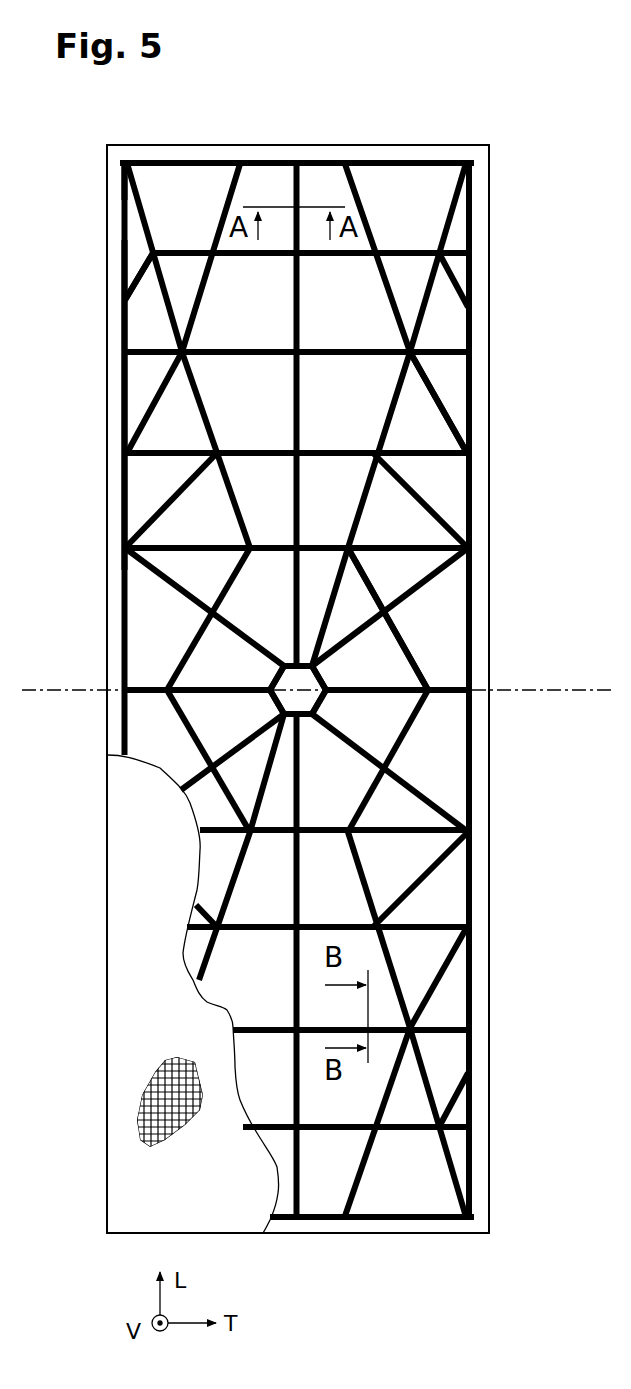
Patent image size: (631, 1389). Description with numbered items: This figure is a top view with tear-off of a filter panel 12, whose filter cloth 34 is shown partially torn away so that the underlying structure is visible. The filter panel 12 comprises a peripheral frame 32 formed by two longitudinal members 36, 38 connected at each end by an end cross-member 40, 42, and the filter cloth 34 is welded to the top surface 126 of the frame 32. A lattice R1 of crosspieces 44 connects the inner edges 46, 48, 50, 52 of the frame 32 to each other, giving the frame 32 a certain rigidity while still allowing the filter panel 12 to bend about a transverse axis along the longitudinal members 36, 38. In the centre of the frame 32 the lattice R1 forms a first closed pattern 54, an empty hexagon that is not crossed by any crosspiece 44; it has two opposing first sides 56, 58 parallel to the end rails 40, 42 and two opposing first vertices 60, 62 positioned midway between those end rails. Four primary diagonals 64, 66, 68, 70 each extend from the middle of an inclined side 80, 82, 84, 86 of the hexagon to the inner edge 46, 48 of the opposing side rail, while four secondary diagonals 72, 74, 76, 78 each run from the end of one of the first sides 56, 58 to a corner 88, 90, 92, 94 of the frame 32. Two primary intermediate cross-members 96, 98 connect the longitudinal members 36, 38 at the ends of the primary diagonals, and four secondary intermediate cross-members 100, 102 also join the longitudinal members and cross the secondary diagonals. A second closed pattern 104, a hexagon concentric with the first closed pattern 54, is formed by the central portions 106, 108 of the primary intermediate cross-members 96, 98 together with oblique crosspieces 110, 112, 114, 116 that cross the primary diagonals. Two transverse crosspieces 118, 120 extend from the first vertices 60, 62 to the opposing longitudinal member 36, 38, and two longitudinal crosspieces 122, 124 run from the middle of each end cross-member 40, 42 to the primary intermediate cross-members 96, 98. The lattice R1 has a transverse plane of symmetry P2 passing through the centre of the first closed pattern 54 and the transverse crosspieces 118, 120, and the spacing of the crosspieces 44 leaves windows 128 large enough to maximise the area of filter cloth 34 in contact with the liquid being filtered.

The filter panel 12 is at (541, 746).
The peripheral frame 32 is at (101, 447).
The filter cloth 34 is at (164, 1172).
The longitudinal member 36 is at (101, 642).
The longitudinal member 38 is at (490, 510).
The end cross-member 40 is at (286, 143).
The end cross-member 42 is at (286, 1236).
The crosspieces 44 is at (417, 245).
The inner edge 46 is at (142, 322).
The inner edge 48 is at (455, 325).
The inner edge 50 is at (177, 172).
The inner edge 52 is at (440, 1175).
The first closed pattern 54 is at (351, 680).
The first side 56 is at (395, 590).
The first side 58 is at (461, 797).
The first vertex 60 is at (258, 700).
The first vertex 62 is at (345, 700).
The primary diagonal 64 is at (141, 588).
The primary diagonal 66 is at (416, 621).
The primary diagonal 68 is at (187, 792).
The primary diagonal 70 is at (386, 813).
The secondary diagonal 72 is at (213, 493).
The secondary diagonal 74 is at (407, 412).
The secondary diagonal 76 is at (216, 863).
The secondary diagonal 78 is at (440, 905).
The inclined side of the hexagon 80 is at (252, 680).
The inclined side of the hexagon 82 is at (370, 600).
The inclined side of the hexagon 84 is at (252, 712).
The inclined side of the hexagon 86 is at (400, 745).
The corner of the frame 88 is at (114, 146).
The corner of the frame 90 is at (467, 152).
The corner of the frame 92 is at (106, 1232).
The corner of the frame 94 is at (488, 1218).
The primary intermediate cross-member 96 is at (169, 533).
The primary intermediate cross-member 98 is at (259, 933).
The secondary intermediate cross-member 100 is at (242, 433).
The secondary intermediate cross-member 102 is at (273, 1023).
The second closed pattern 104 is at (389, 870).
The central portion 106 is at (378, 490).
The central portion 108 is at (460, 1000).
The oblique crosspiece 110 is at (165, 672).
The oblique crosspiece 112 is at (430, 655).
The oblique crosspiece 114 is at (258, 841).
The oblique crosspiece 116 is at (440, 840).
The transverse crosspiece 118 is at (152, 703).
The transverse crosspiece 120 is at (400, 702).
The longitudinal crosspiece 122 is at (456, 300).
The longitudinal crosspiece 124 is at (302, 1108).
The top surface 126 is at (209, 150).
The windows 128 is at (152, 238).
The lattice of crosspieces R1 is at (439, 105).
The transverse plane of symmetry P2 is at (317, 671).